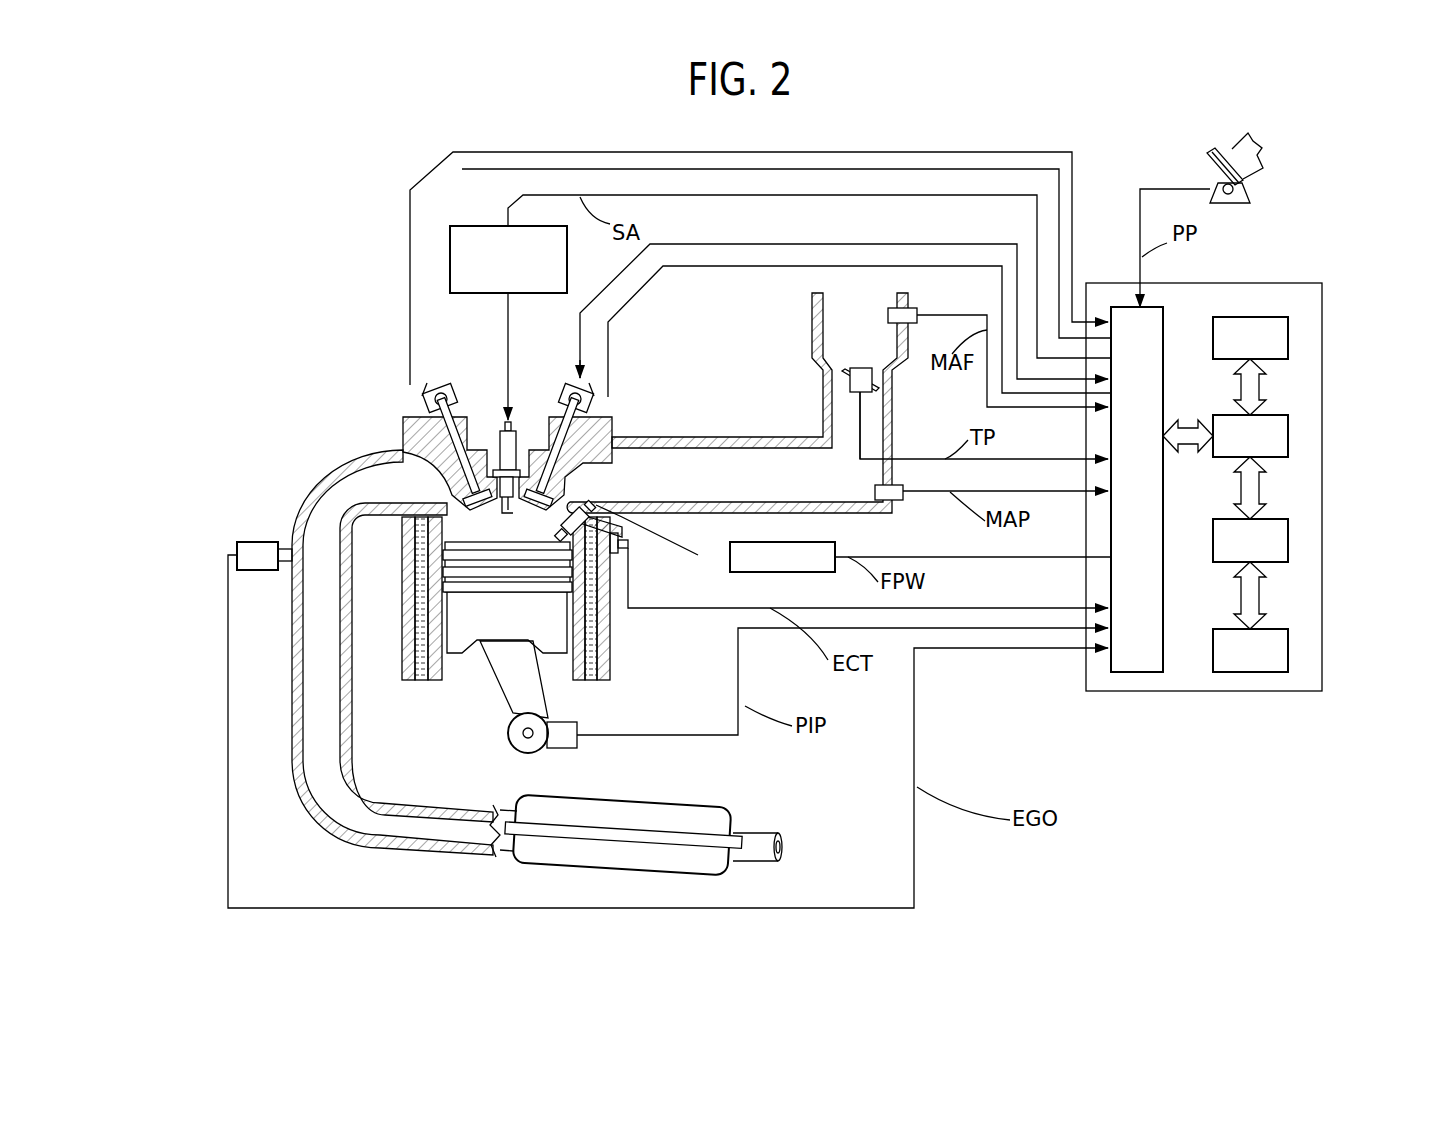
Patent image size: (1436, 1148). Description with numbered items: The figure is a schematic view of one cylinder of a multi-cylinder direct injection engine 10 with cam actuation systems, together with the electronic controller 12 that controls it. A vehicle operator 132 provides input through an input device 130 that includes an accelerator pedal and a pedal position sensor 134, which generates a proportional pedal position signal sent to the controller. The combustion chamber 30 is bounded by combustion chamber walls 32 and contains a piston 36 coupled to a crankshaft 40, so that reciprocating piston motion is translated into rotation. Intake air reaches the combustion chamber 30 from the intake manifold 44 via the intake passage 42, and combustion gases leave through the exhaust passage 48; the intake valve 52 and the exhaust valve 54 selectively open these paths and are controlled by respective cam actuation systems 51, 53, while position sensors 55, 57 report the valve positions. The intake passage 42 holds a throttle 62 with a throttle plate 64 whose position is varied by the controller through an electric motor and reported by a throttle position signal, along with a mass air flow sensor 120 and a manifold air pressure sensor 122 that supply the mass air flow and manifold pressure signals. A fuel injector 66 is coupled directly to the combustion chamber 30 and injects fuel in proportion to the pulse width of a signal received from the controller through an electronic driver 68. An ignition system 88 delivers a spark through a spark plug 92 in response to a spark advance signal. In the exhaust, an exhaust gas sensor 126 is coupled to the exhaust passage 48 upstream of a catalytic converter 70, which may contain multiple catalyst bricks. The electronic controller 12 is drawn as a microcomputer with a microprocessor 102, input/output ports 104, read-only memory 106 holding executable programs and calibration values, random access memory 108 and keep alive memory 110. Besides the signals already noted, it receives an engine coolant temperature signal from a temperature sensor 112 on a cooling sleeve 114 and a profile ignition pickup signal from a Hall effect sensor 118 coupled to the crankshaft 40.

The engine 10 is at (333, 367).
The electronic controller 12 is at (1313, 283).
The combustion chamber 30 is at (507, 520).
The combustion chamber walls 32 is at (448, 665).
The piston 36 is at (490, 627).
The crankshaft 40 is at (518, 752).
The intake passage 42 is at (874, 347).
The intake manifold 44 is at (806, 491).
The exhaust passage 48 is at (386, 493).
The cam actuation system 51 is at (567, 385).
The intake valve 52 is at (565, 488).
The cam actuation system 53 is at (449, 385).
The exhaust valve 54 is at (452, 487).
The position sensor 55 is at (597, 407).
The position sensor 57 is at (424, 402).
The throttle 62 is at (877, 383).
The throttle plate 64 is at (848, 380).
The fuel injector 66 is at (613, 523).
The electronic driver 68 is at (760, 573).
The catalytic converter 70 is at (690, 800).
The ignition system 88 is at (462, 224).
The spark plug 92 is at (516, 425).
The microprocessor 102 is at (1290, 430).
The input/output ports 104 is at (1165, 317).
The read-only memory 106 is at (1290, 330).
The random access memory 108 is at (1290, 540).
The keep alive memory 110 is at (1290, 650).
The temperature sensor 112 is at (643, 567).
The cooling sleeve 114 is at (598, 628).
The Hall effect sensor 118 is at (565, 748).
The mass air flow sensor 120 is at (905, 307).
The manifold air pressure sensor 122 is at (895, 503).
The exhaust gas sensor 126 is at (237, 546).
The input device 130 is at (1207, 158).
The vehicle operator 132 is at (1262, 152).
The pedal position sensor 134 is at (1248, 195).